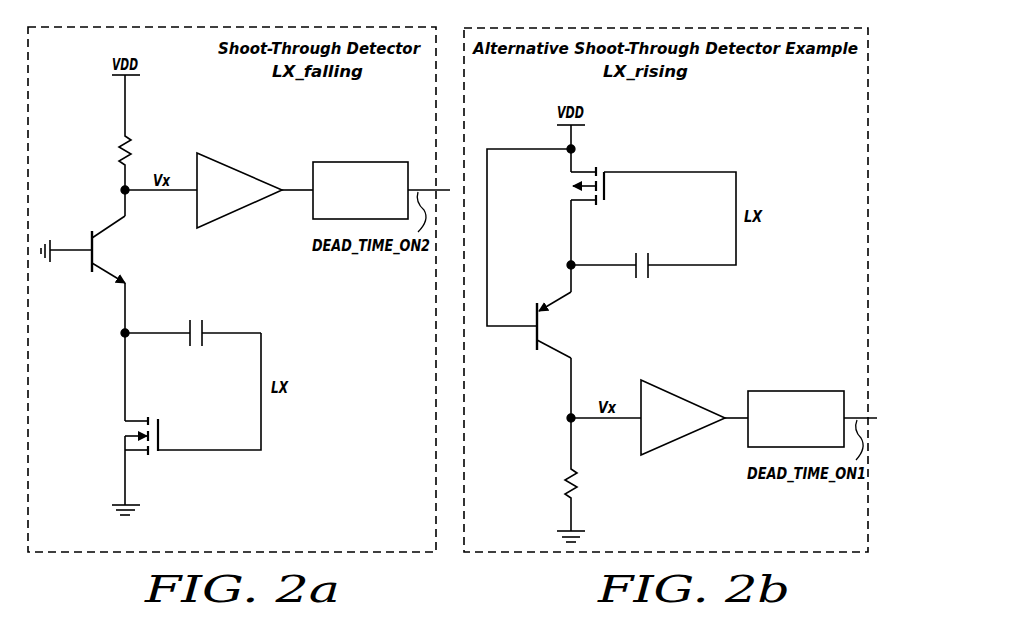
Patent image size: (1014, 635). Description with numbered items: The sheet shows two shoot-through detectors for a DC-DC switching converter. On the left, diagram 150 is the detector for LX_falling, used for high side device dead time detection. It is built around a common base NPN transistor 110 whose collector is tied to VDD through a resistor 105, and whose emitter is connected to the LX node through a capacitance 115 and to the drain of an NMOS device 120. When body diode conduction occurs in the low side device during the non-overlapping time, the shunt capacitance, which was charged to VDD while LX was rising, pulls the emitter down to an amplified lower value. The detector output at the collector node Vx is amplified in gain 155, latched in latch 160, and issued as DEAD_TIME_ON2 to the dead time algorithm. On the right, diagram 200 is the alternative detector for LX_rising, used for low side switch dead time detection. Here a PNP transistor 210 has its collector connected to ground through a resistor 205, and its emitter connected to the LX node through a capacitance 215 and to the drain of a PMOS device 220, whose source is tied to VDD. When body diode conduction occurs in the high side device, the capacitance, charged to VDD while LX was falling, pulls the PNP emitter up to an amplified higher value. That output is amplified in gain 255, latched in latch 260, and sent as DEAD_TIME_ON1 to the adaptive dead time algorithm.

In FIG. 2a, the diagram of shoot-through detector 150 is at (380, 27).
In FIG. 2a, the resistor 105 is at (108, 152).
In FIG. 2a, the common base NPN transistor 110 is at (85, 242).
In FIG. 2a, the capacitance 115 is at (210, 322).
In FIG. 2a, the NMOS device 120 is at (162, 432).
In FIG. 2a, the gain 155 is at (218, 161).
In FIG. 2a, the latch 160 is at (357, 163).
In FIG. 2b, the diagram of alternative shoot-through detector 200 is at (813, 27).
In FIG. 2b, the resistor 205 is at (552, 482).
In FIG. 2b, the PNP transistor 210 is at (528, 313).
In FIG. 2b, the capacitance 215 is at (655, 251).
In FIG. 2b, the PMOS device 220 is at (610, 166).
In FIG. 2b, the gain 255 is at (662, 390).
In FIG. 2b, the latch 260 is at (790, 391).